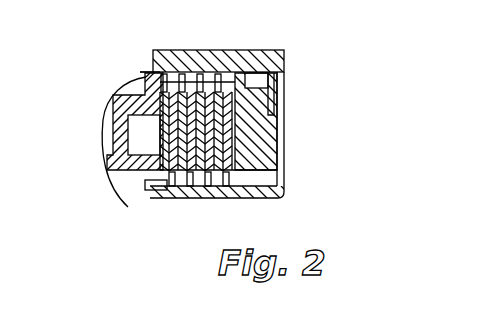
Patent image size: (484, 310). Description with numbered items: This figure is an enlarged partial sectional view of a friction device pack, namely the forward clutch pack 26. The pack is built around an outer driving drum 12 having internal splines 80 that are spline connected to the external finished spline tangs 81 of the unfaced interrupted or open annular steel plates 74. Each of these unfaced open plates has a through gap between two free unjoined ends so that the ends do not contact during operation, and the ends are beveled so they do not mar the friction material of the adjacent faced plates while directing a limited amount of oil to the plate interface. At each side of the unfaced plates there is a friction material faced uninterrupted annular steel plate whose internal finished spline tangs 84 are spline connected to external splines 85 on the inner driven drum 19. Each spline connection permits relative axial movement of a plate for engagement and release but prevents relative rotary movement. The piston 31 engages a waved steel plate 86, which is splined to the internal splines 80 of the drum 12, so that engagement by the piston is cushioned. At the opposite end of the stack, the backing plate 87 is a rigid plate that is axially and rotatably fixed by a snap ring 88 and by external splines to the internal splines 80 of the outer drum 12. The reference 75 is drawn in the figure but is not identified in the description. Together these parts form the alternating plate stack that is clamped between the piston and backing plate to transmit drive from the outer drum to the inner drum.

The outer driving drum 12 is at (252, 53).
The inner driven drum 19 is at (165, 198).
The forward clutch pack 26 is at (130, 45).
The piston 31 is at (103, 133).
The unfaced interrupted annular steel plates 74 is at (217, 92).
The lower contact pins 75 is at (185, 190).
The internal splines 80 is at (145, 75).
The external finished spline tangs 81 is at (186, 80).
The internal finished spline tangs 84 is at (226, 188).
The external splines 85 is at (113, 183).
The waved steel plate 86 is at (148, 77).
The backing plate 87 is at (263, 148).
The snap ring 88 is at (273, 85).